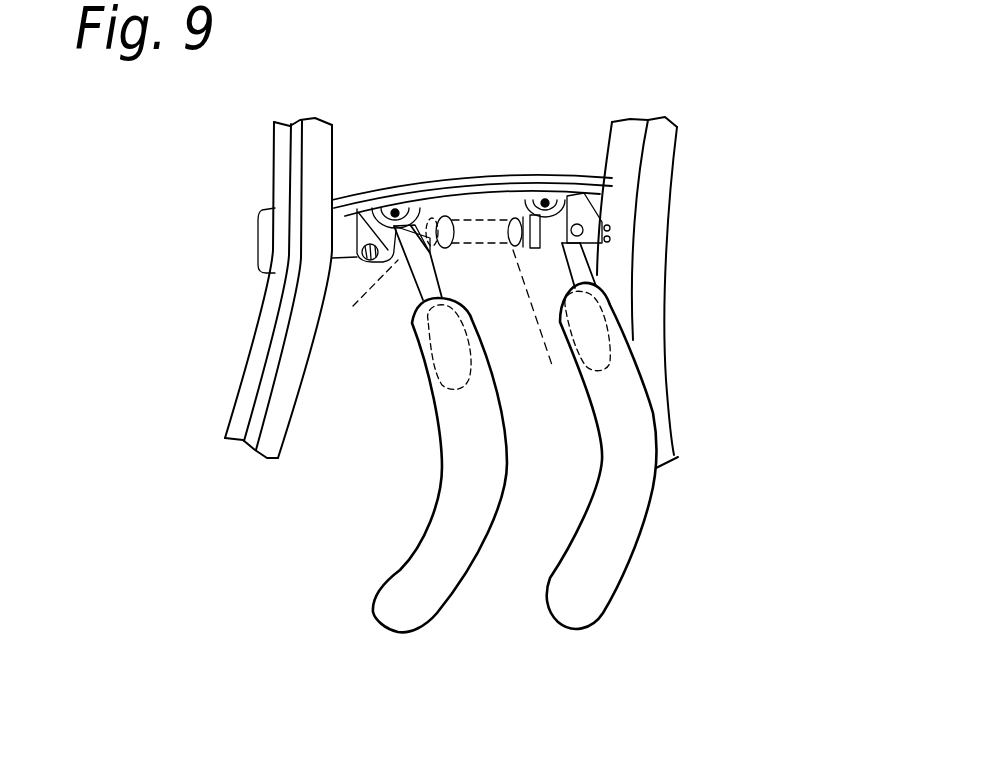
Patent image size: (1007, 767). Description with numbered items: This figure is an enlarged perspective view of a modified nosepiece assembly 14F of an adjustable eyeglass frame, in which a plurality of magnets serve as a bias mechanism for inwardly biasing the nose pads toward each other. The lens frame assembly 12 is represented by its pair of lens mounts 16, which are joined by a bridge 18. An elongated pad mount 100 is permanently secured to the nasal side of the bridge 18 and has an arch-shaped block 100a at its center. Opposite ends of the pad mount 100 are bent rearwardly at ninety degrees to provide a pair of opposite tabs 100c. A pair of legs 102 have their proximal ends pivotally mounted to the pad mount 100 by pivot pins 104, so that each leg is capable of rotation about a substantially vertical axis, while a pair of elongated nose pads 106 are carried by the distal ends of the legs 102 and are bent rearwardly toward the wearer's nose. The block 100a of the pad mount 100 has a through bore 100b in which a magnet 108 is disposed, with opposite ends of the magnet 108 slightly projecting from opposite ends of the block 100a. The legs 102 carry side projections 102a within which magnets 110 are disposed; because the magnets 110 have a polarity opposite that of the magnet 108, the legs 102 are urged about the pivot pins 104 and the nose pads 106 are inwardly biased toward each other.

The lens frame assembly 12 is at (213, 397).
The nosepiece assembly 14F is at (477, 587).
The lens mounts 16 is at (284, 162).
The bridge 18 is at (348, 200).
The pad mount 100 is at (515, 192).
The arch-shaped block 100a is at (476, 216).
The through bore 100b is at (428, 202).
The tabs 100c is at (598, 204).
The legs 102 is at (592, 280).
The side projections 102a is at (430, 256).
The pivot pins 104 is at (395, 210).
The nose pads 106 is at (463, 522).
The magnet 108 is at (545, 330).
The magnets 110 is at (359, 302).